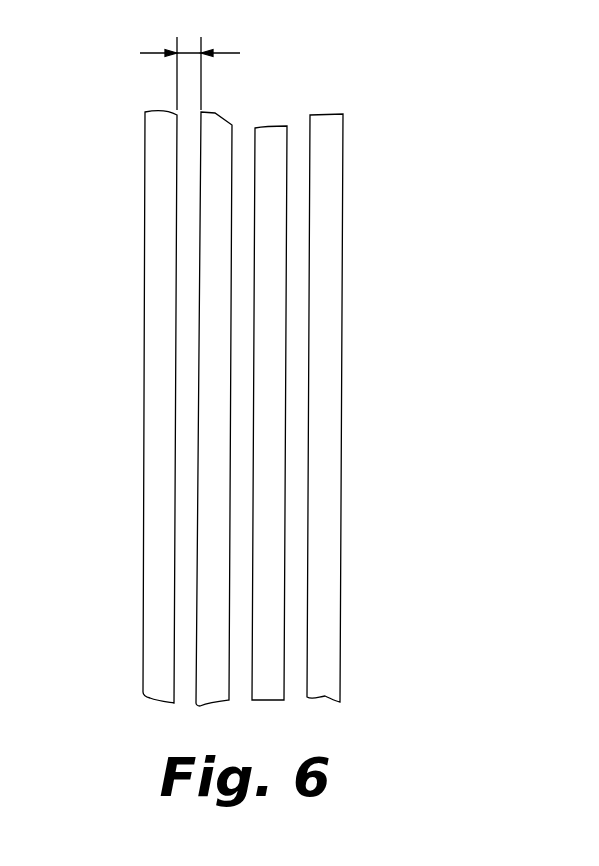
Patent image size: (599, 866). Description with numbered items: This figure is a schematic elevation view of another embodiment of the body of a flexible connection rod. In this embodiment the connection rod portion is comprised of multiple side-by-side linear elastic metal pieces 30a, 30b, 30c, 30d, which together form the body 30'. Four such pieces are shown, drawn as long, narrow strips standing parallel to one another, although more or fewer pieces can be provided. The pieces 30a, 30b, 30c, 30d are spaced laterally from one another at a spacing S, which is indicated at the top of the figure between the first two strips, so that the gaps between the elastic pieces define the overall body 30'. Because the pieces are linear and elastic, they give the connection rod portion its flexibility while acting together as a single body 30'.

The spacing S is at (190, 66).
The body 30' is at (270, 408).
The linear elastic piece 30a is at (145, 225).
The linear elastic piece 30b is at (198, 398).
The linear elastic piece 30c is at (286, 462).
The linear elastic piece 30d is at (343, 194).